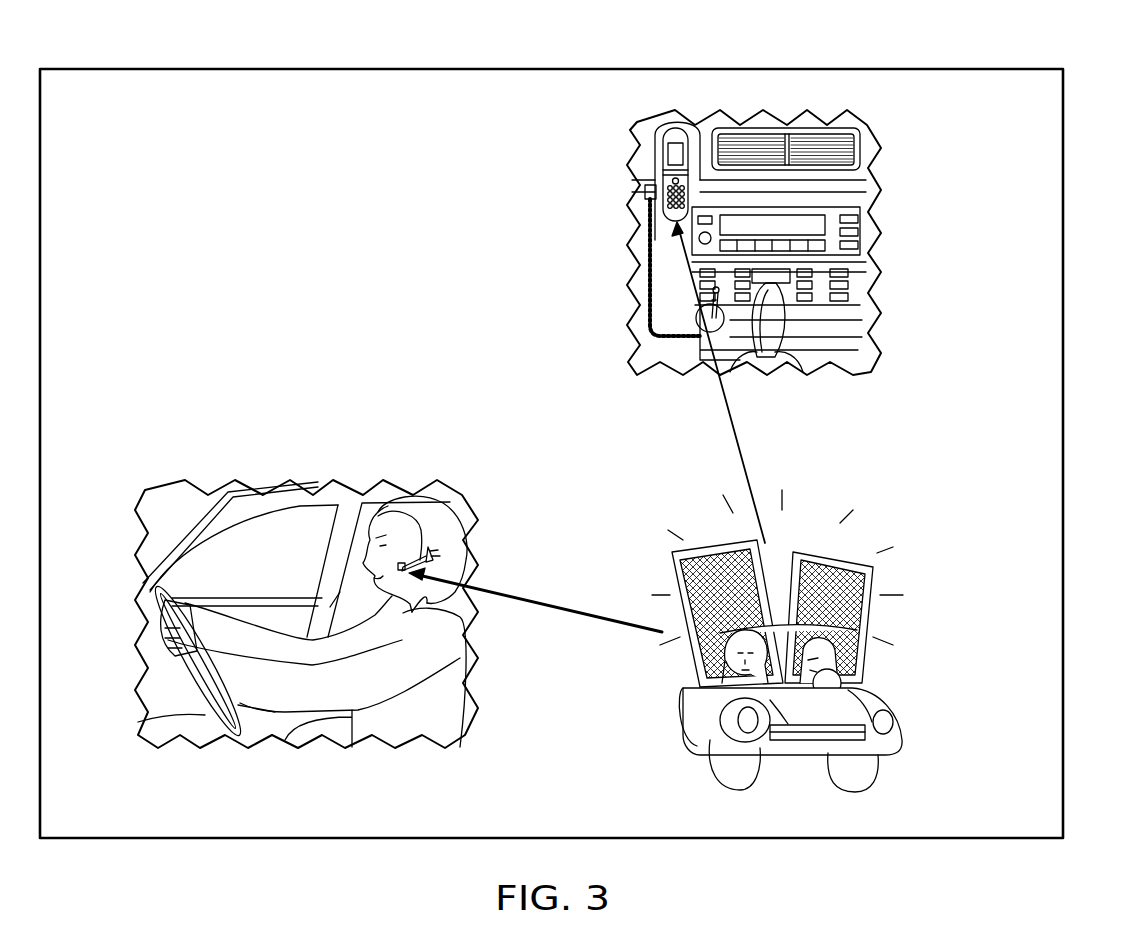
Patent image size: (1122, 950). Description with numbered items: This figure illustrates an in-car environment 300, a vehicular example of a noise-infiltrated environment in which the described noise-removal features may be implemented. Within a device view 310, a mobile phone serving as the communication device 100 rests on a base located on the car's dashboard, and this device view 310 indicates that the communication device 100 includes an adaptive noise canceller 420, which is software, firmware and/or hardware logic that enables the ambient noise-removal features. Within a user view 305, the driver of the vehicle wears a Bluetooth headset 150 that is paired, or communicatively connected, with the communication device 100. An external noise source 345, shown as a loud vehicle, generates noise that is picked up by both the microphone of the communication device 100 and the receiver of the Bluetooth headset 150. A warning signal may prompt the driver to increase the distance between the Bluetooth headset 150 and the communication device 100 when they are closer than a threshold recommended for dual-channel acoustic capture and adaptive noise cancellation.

The in-car environment 300 is at (960, 69).
The communication device 100 is at (662, 138).
The adaptive noise canceller 420 is at (657, 214).
The device view 310 is at (858, 246).
The user view 305 is at (366, 500).
The Bluetooth headset 150 is at (442, 554).
The noise source vehicle 345 is at (878, 578).